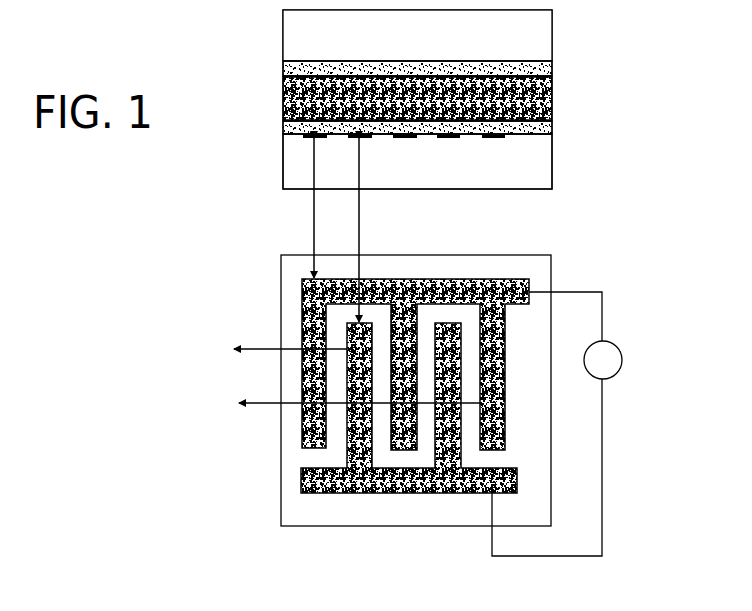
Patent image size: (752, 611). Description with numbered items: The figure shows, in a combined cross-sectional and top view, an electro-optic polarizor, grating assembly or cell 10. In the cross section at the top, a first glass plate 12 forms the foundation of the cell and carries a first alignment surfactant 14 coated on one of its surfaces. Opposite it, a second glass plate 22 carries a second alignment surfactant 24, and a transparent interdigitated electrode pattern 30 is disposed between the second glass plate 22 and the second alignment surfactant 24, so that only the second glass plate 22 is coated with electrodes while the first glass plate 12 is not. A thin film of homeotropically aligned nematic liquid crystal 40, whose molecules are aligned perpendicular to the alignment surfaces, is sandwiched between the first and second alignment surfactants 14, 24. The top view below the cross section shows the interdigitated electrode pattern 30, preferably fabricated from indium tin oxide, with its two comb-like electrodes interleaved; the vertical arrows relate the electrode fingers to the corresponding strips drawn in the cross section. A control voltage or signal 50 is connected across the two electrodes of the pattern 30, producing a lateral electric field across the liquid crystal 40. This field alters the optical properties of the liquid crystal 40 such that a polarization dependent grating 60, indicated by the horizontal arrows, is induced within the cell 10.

The polarizor cell 10 is at (644, 90).
The first glass plate 12 is at (545, 34).
The first alignment surfactant 14 is at (545, 71).
The homeotropically aligned nematic liquid crystal 40 is at (545, 102).
The second alignment surfactant 24 is at (545, 131).
The second glass plate 22 is at (545, 176).
The transparent interdigitated electrode pattern 30 is at (495, 138).
The control voltage 50 is at (617, 347).
The polarization dependent grating 60 is at (222, 345).